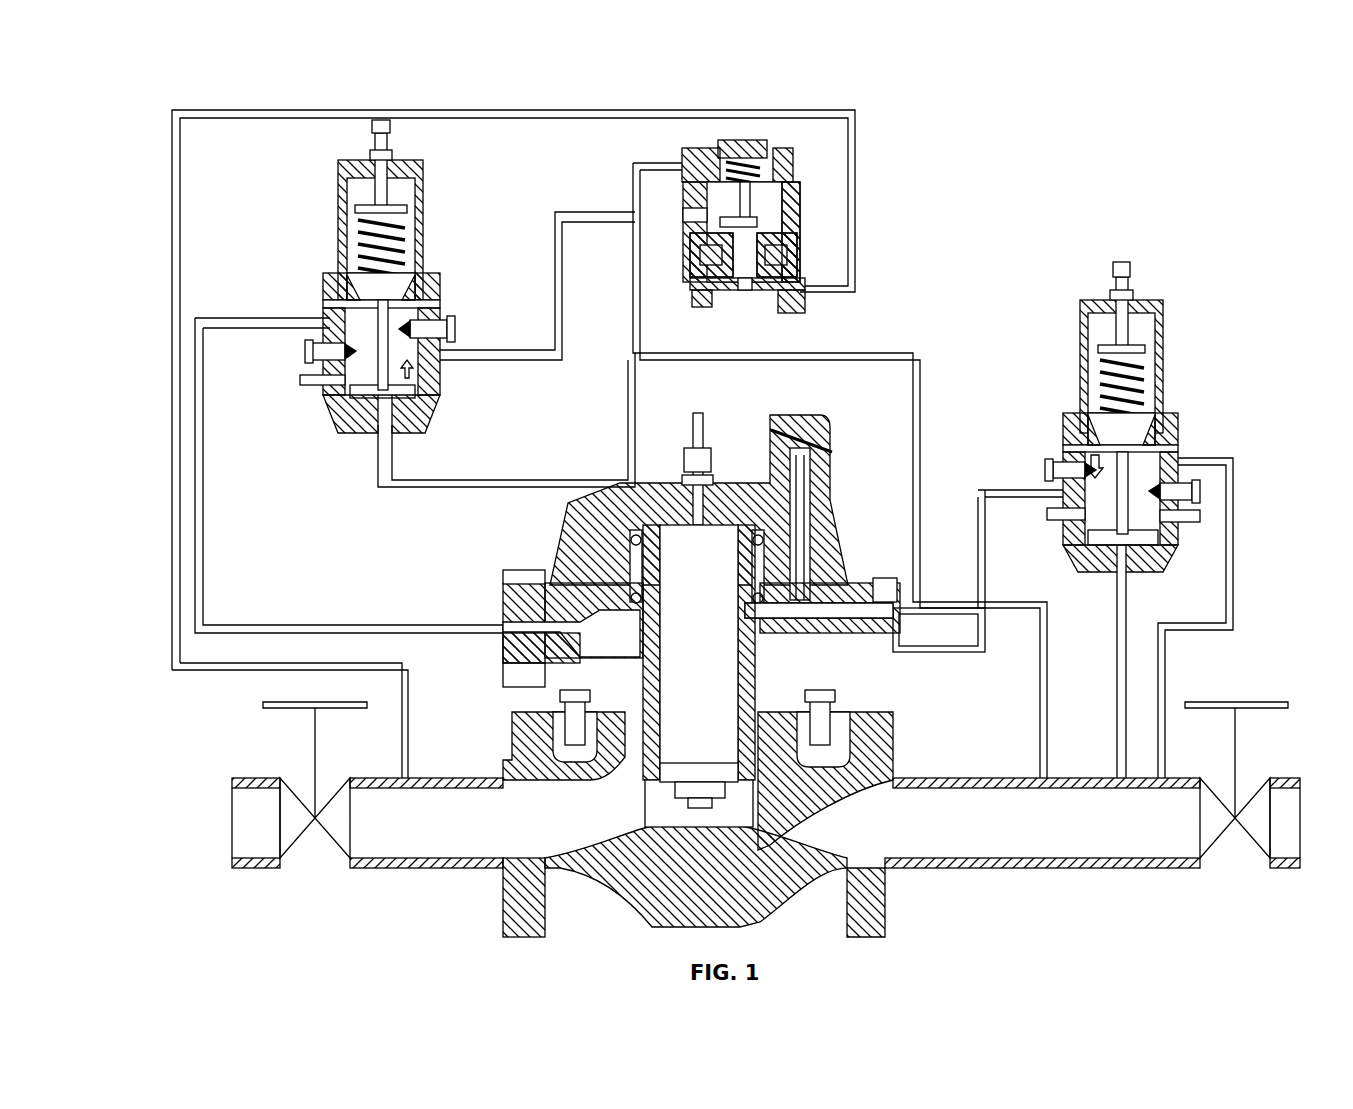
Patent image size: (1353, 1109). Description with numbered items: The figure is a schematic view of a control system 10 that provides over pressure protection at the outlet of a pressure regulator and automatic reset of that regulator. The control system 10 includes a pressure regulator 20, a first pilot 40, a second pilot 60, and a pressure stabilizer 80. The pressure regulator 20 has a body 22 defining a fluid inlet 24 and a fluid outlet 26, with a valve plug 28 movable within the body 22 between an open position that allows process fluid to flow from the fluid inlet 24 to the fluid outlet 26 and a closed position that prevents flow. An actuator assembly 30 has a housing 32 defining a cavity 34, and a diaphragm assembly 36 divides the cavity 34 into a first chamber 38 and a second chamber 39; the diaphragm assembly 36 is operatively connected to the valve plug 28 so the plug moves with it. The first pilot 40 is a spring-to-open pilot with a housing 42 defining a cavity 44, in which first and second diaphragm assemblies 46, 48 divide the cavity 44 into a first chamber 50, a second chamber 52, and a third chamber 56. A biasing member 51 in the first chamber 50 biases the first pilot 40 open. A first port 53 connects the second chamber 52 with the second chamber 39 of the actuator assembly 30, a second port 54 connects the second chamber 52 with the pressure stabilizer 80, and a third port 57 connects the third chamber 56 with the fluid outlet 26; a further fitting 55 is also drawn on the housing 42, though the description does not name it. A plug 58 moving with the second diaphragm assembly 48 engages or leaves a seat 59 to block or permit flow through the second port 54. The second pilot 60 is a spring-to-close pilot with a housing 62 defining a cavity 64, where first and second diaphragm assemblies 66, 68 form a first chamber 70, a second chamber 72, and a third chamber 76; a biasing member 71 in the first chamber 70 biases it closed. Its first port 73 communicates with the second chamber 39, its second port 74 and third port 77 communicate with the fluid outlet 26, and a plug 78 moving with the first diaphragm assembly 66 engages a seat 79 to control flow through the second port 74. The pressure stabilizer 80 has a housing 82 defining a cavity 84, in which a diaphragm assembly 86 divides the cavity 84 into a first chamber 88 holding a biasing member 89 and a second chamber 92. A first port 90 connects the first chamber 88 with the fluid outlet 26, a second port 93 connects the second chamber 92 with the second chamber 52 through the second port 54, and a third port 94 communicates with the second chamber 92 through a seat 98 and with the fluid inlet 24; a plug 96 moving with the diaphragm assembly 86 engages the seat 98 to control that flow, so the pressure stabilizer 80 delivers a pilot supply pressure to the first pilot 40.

The control system 10 is at (165, 92).
The pressure regulator 20 is at (690, 945).
The body 22 is at (722, 920).
The fluid inlet 24 is at (528, 845).
The fluid outlet 26 is at (872, 838).
The valve plug 28 is at (698, 800).
The actuator assembly 30 is at (651, 681).
The housing 32 is at (568, 555).
The cavity 34 is at (545, 660).
The diaphragm assembly 36 is at (765, 648).
The first chamber 38 is at (590, 525).
The second chamber 39 is at (833, 680).
The first pilot 40 is at (383, 259).
The housing 42 is at (325, 287).
The cavity 44 is at (350, 285).
The first diaphragm assembly 46 is at (413, 292).
The second diaphragm assembly 48 is at (412, 397).
The first chamber 50 is at (350, 190).
The biasing member 51 is at (405, 230).
The second chamber 52 is at (345, 380).
The first port 53 is at (330, 322).
The second port 54 is at (440, 352).
The inlet port 55 is at (305, 348).
The third chamber 56 is at (350, 407).
The third port 57 is at (380, 428).
The plug 58 is at (420, 385).
The seat 59 is at (420, 350).
The second pilot 60 is at (1131, 427).
The housing 62 is at (1067, 430).
The cavity 64 is at (1088, 425).
The first diaphragm assembly 66 is at (1142, 447).
The second diaphragm assembly 68 is at (1130, 545).
The first chamber 70 is at (1095, 335).
The biasing member 71 is at (1145, 365).
The second chamber 72 is at (1178, 482).
The first port 73 is at (1085, 508).
The second port 74 is at (1185, 458).
The third chamber 76 is at (1100, 558).
The third port 77 is at (1125, 572).
The plug 78 is at (1088, 460).
The seat 79 is at (1048, 470).
The pressure stabilizer 80 is at (767, 208).
The housing 82 is at (800, 212).
The cavity 84 is at (782, 208).
The diaphragm assembly 86 is at (778, 165).
The first chamber 88 is at (715, 162).
The biasing member 89 is at (745, 150).
The first port 90 is at (633, 162).
The second chamber 92 is at (770, 192).
The second port 93 is at (690, 228).
The third port 94 is at (740, 292).
The plug 96 is at (725, 215).
The seat 98 is at (790, 238).